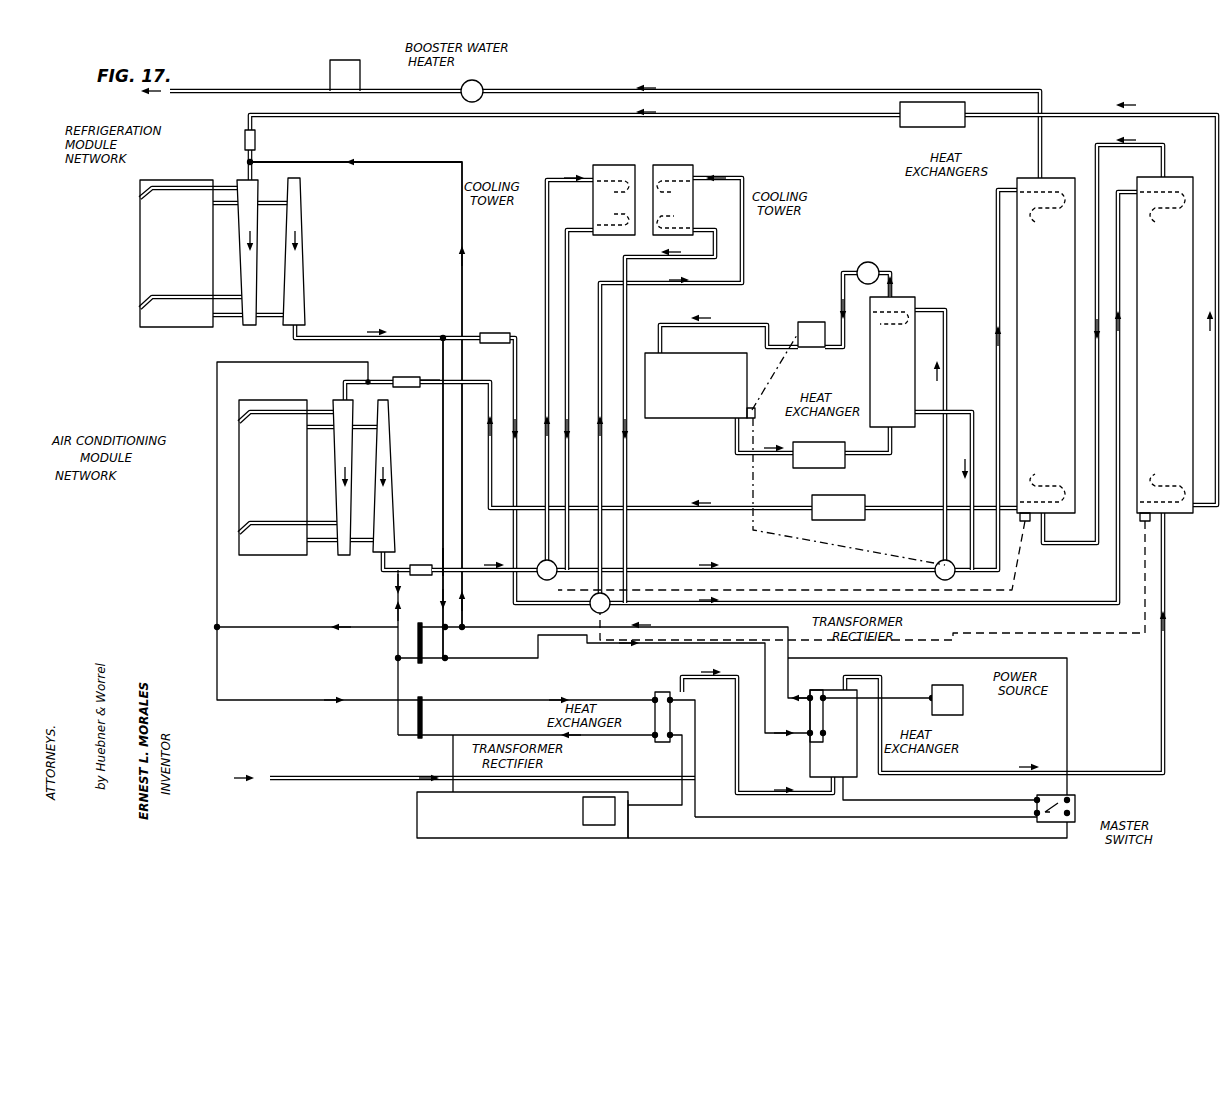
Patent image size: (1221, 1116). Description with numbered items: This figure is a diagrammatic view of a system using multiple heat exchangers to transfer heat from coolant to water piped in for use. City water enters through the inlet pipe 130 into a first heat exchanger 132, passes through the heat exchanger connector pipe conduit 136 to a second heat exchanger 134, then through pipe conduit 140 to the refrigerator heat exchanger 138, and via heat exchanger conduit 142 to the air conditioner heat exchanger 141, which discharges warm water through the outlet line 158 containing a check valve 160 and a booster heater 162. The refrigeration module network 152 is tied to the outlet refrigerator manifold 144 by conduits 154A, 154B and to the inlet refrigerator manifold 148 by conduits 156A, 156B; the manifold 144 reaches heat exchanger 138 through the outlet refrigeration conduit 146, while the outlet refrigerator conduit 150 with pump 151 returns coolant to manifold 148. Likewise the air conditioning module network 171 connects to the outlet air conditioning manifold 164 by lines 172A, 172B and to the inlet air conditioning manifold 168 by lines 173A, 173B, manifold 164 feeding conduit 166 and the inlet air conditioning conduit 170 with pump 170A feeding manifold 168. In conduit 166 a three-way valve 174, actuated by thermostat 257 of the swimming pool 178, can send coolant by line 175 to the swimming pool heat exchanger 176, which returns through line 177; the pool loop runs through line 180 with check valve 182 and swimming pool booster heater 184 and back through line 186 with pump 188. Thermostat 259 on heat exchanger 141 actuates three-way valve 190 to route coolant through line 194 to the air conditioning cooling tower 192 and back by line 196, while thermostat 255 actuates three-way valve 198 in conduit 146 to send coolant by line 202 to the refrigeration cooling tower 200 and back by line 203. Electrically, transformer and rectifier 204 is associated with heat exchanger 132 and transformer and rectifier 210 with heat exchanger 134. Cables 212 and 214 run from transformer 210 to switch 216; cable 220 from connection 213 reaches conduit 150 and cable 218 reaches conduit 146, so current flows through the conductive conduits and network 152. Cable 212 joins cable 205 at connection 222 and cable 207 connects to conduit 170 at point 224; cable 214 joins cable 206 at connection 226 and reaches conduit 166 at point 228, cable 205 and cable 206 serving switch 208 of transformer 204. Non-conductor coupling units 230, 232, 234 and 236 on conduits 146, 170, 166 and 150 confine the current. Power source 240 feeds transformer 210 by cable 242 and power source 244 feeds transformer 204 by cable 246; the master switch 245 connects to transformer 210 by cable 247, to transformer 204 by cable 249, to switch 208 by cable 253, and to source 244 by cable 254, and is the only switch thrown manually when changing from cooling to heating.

The inlet pipe 130 is at (472, 781).
The first heat exchanger 132 is at (697, 780).
The second heat exchanger 134 is at (810, 760).
The heat exchanger connector pipe conduit 136 is at (770, 796).
The refrigerator heat exchanger 138 is at (1181, 362).
The pipe conduit 140 is at (1068, 773).
The air conditioner heat exchanger 141 is at (1062, 366).
The heat exchanger conduit 142 is at (1153, 146).
The outlet refrigerator manifold 144 is at (304, 279).
The outlet refrigeration conduit 146 is at (422, 338).
The inlet refrigerator manifold 148 is at (248, 330).
The outlet refrigerator conduit 150 is at (535, 118).
The pump 151 is at (918, 128).
The refrigeration module network 152 is at (140, 250).
The conduit 154A is at (268, 200).
The conduit 154B is at (228, 318).
The conduit 156A is at (228, 186).
The conduit 156B is at (224, 296).
The outlet line 158 is at (752, 91).
The check valve 160 is at (478, 82).
The booster heater 162 is at (362, 70).
The outlet air conditioning manifold 164 is at (389, 490).
The outlet air conditioning conduit 166 is at (472, 575).
The inlet air conditioning manifold 168 is at (333, 448).
The inlet air conditioning conduit 170 is at (393, 378).
The pump 170A is at (820, 522).
The air conditioning module network 171 is at (239, 501).
The line 172A is at (386, 426).
The line 172B is at (362, 550).
The line 173A is at (306, 410).
The line 173B is at (320, 540).
The three-way valve 174 is at (937, 575).
The line 175 is at (948, 340).
The swimming pool heat exchanger 176 is at (870, 382).
The line 177 is at (978, 415).
The swimming pool 178 is at (708, 418).
The line 180 is at (840, 286).
The check valve 182 is at (880, 264).
The swimming pool booster heater 184 is at (808, 322).
The line 186 is at (870, 460).
The pump 188 is at (793, 466).
The three-way valve 190 is at (545, 580).
The air conditioning cooling tower 192 is at (611, 170).
The line 194 is at (545, 268).
The line 196 is at (570, 268).
The three-way valve 198 is at (612, 612).
The refrigeration cooling tower 200 is at (680, 168).
The line 202 is at (604, 312).
The line 203 is at (628, 455).
The transformer and rectifier 204 is at (657, 692).
The electric cable 205 is at (220, 686).
The electric cable 206 is at (440, 738).
The cable 207 is at (217, 425).
The switch 208 is at (424, 712).
The transformer and rectifier 210 is at (810, 690).
The electric cable 212 is at (525, 612).
The connection 213 is at (463, 631).
The electric cable 214 is at (545, 656).
The switch 216 is at (401, 630).
The cable 218 is at (441, 472).
The cable 220 is at (465, 232).
The connection 222 is at (220, 627).
The connection point 224 is at (345, 384).
The connection 226 is at (398, 658).
The connection point 228 is at (398, 562).
The non-conductor coupling unit 230 is at (494, 332).
The non-conductor coupling unit 232 is at (402, 389).
The non-conductor coupling unit 234 is at (447, 562).
The non-conductor coupling unit 236 is at (256, 137).
The power source 240 is at (963, 704).
The cable 242 is at (905, 690).
The power source 244 is at (583, 812).
The master switch 245 is at (1078, 803).
The cable 246 is at (682, 800).
The cable 247 is at (920, 801).
The cable 249 is at (736, 817).
The cable 253 is at (417, 815).
The cable 254 is at (628, 825).
The thermostat 255 is at (1143, 525).
The thermostat 257 is at (760, 405).
The thermostat 259 is at (1025, 525).